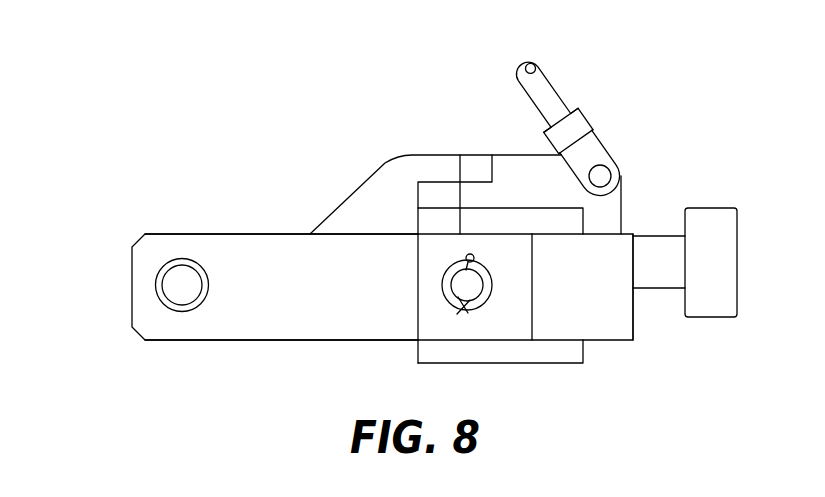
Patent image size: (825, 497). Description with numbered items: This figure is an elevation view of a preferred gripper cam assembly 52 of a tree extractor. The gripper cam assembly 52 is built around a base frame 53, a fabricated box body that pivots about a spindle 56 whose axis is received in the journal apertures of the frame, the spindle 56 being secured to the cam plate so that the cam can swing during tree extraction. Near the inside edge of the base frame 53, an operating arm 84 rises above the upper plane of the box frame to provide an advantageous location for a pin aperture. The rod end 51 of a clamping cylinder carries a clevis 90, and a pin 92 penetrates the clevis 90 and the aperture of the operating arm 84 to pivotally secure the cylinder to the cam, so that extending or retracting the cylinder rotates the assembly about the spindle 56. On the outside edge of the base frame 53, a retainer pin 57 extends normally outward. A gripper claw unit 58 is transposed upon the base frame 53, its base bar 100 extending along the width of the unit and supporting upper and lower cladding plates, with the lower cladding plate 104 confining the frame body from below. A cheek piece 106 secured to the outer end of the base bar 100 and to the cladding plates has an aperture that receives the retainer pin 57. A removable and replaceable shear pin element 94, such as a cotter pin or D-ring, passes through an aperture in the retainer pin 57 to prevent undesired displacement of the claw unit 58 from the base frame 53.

The rod end 51 is at (543, 80).
The gripper cam assembly 52 is at (266, 224).
The base frame 53 is at (316, 297).
The spindle 56 is at (165, 287).
The retainer pin 57 is at (465, 288).
The gripper claw unit 58 is at (683, 305).
The operating arm 84 is at (387, 185).
The clevis 90 is at (592, 140).
The pin 92 is at (619, 175).
The shear pin element 94 is at (468, 256).
The base bar 100 is at (566, 294).
The lower cladding plate 104 is at (497, 353).
The cheek piece 106 is at (482, 229).